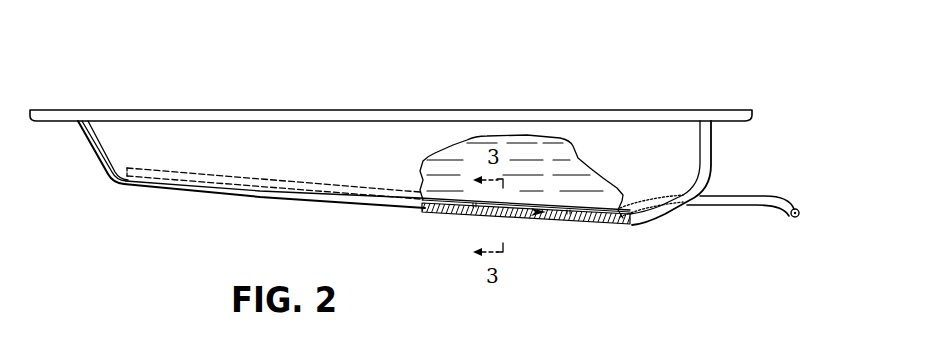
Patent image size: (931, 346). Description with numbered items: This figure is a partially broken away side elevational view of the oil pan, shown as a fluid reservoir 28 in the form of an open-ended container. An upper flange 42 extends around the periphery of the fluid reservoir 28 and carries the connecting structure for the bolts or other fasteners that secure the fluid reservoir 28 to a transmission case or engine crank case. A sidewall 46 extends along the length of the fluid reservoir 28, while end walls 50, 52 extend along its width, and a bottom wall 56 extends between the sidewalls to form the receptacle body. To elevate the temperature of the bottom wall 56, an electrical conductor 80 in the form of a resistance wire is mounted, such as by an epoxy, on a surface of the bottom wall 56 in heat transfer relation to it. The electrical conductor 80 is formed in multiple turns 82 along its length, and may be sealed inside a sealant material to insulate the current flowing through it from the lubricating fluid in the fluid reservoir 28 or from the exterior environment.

The fluid reservoir 28 is at (419, 131).
The upper flange 42 is at (722, 109).
The sidewall 46 is at (337, 163).
The end wall 50 is at (87, 147).
The end wall 52 is at (712, 157).
The bottom wall 56 is at (578, 226).
The electrical conductor 80 is at (548, 226).
The turns 82 is at (755, 207).